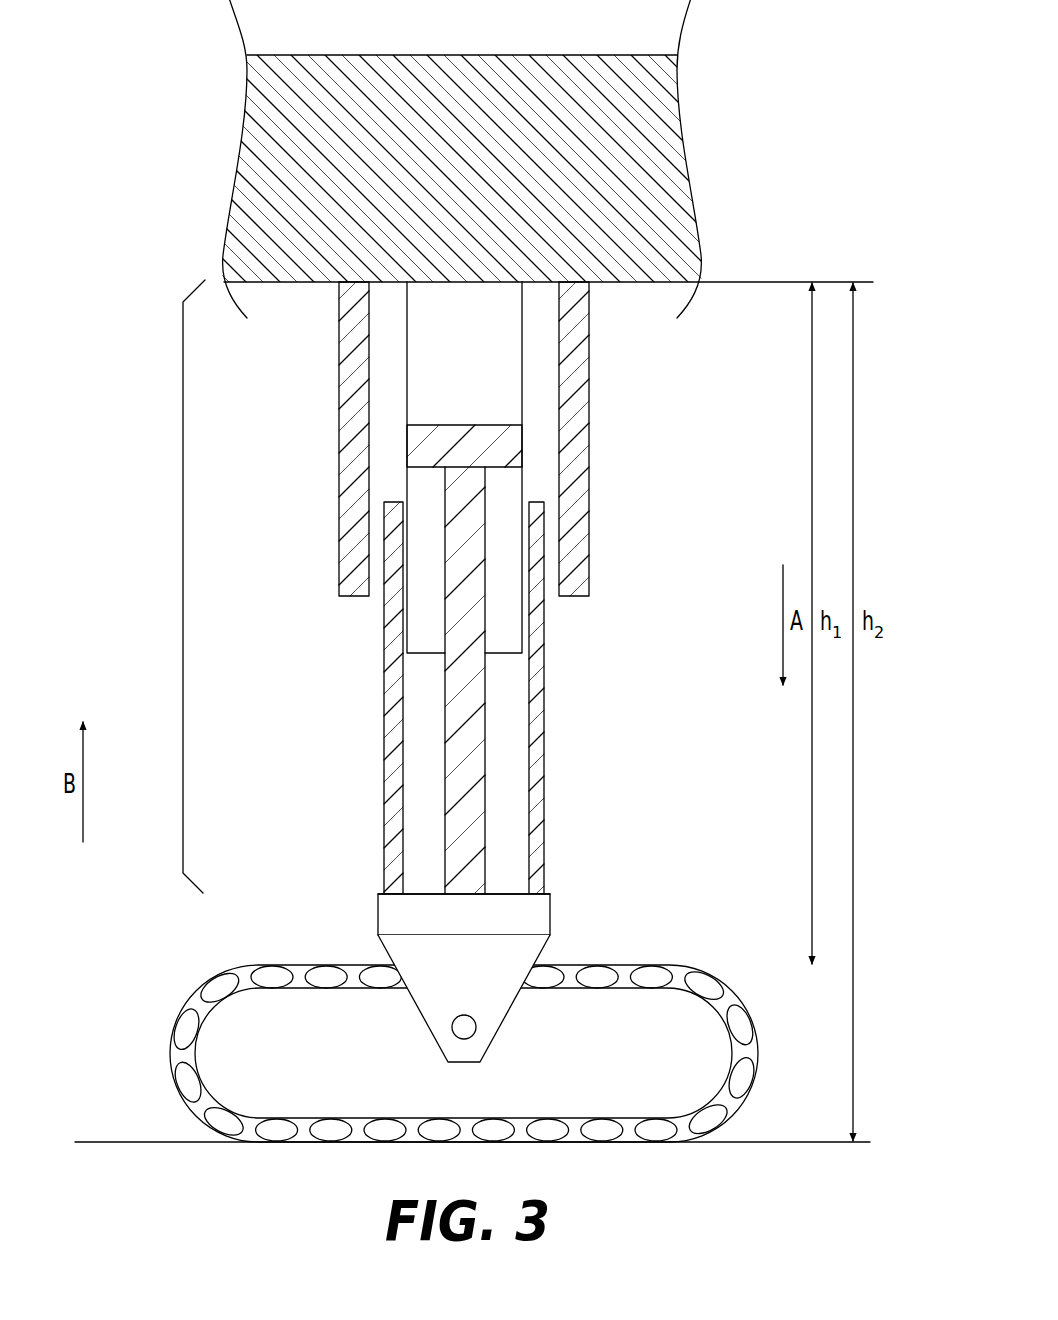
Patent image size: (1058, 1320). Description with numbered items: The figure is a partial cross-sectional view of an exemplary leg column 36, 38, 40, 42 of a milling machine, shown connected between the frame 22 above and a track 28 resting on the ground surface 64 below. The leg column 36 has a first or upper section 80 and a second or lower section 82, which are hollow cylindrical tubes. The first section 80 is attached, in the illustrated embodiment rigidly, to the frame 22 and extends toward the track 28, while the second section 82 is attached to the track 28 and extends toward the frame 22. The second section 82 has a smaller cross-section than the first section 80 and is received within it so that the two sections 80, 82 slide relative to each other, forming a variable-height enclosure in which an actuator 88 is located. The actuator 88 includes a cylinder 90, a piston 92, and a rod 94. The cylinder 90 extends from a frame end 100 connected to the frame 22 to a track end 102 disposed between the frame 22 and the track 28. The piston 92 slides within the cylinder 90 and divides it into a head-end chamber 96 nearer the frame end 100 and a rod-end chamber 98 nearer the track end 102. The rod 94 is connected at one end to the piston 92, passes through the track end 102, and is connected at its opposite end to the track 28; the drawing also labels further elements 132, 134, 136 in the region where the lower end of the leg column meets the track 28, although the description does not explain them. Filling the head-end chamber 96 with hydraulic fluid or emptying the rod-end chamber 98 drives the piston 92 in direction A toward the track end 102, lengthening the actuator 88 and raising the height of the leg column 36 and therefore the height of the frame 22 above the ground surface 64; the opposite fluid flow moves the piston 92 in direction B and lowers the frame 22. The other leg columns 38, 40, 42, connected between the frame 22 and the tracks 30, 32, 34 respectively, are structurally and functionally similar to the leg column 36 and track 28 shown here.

The frame 22 is at (479, 183).
The track 28 is at (507, 1028).
The track 30 is at (507, 1028).
The track 32 is at (507, 1028).
The track 34 is at (507, 1028).
The leg column 36 is at (136, 586).
The leg column 38 is at (136, 586).
The leg column 40 is at (136, 586).
The leg column 42 is at (183, 622).
The ground surface 64 is at (775, 1143).
The first section 80 is at (582, 373).
The second section 82 is at (533, 808).
The actuator 88 is at (402, 389).
The cylinder 90 is at (523, 467).
The piston 92 is at (503, 448).
The rod 94 is at (473, 750).
The head-end chamber 96 is at (480, 366).
The rod-end chamber 98 is at (418, 606).
The frame end 100 is at (494, 267).
The track end 102 is at (505, 663).
The track mounting foot 132 is at (536, 954).
The rod connection 134 is at (511, 894).
The track belt 136 is at (598, 964).